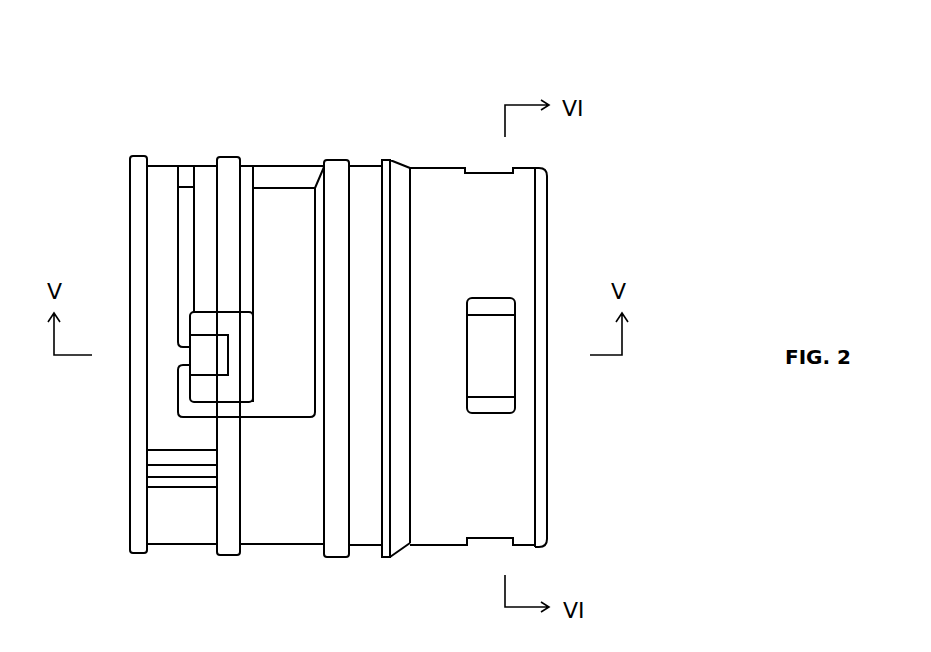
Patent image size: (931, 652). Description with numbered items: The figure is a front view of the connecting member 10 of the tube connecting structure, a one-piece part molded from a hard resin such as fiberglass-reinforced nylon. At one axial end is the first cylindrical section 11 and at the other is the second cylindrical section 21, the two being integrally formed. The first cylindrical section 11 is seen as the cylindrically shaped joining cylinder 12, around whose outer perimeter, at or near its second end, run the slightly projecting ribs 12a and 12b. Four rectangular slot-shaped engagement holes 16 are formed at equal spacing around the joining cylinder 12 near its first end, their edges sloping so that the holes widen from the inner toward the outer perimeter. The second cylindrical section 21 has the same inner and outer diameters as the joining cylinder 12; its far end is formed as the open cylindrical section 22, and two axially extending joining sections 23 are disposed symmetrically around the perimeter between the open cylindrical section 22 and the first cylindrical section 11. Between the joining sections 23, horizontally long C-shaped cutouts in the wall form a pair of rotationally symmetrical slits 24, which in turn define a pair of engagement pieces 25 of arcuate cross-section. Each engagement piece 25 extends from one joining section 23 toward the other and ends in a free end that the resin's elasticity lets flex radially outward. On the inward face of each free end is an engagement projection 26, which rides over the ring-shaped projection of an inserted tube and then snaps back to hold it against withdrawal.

The connecting member 10 is at (569, 174).
The first cylindrical section 11 is at (549, 82).
The joining cylinder 12 is at (441, 168).
The rib 12a is at (326, 160).
The rib 12b is at (383, 160).
The engagement hole 16 is at (498, 176).
The second cylindrical section 21 is at (327, 80).
The open cylindrical section 22 is at (168, 165).
The joining section 23 is at (272, 165).
The slit 24 is at (278, 416).
The engagement piece 25 is at (194, 242).
The engagement projection 26 is at (185, 379).